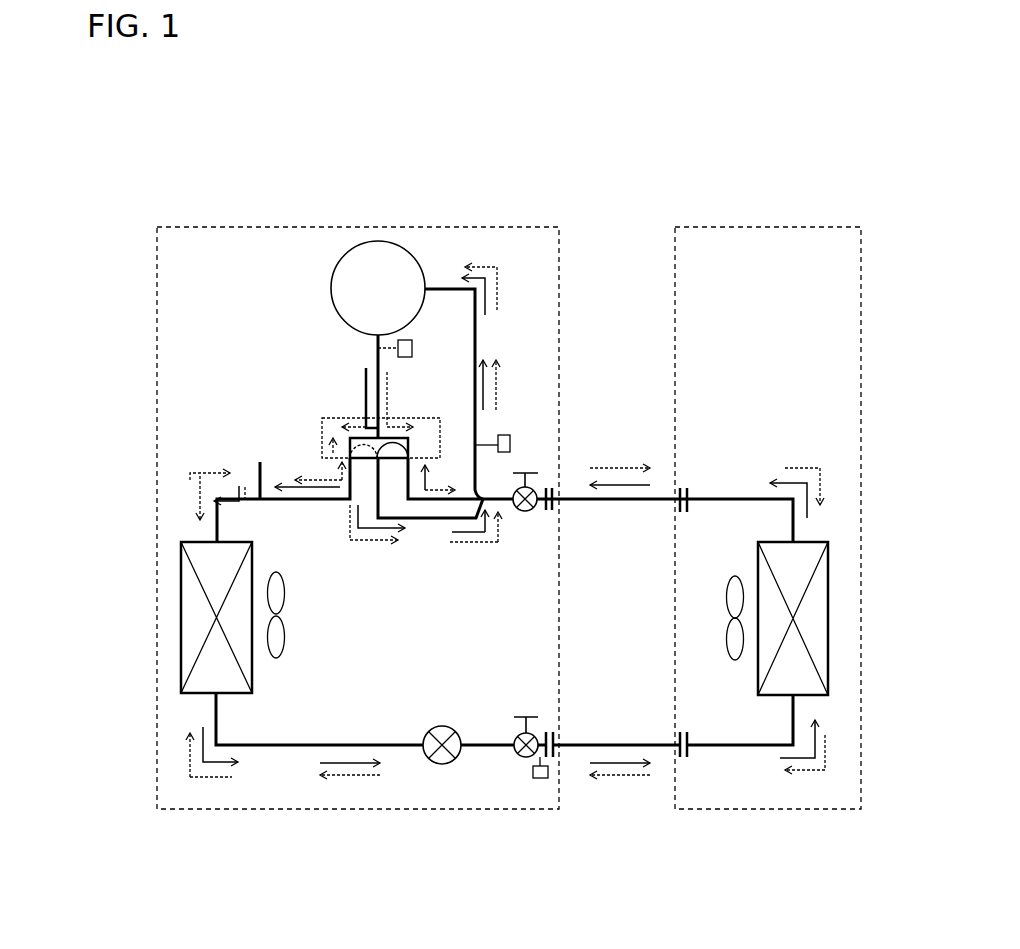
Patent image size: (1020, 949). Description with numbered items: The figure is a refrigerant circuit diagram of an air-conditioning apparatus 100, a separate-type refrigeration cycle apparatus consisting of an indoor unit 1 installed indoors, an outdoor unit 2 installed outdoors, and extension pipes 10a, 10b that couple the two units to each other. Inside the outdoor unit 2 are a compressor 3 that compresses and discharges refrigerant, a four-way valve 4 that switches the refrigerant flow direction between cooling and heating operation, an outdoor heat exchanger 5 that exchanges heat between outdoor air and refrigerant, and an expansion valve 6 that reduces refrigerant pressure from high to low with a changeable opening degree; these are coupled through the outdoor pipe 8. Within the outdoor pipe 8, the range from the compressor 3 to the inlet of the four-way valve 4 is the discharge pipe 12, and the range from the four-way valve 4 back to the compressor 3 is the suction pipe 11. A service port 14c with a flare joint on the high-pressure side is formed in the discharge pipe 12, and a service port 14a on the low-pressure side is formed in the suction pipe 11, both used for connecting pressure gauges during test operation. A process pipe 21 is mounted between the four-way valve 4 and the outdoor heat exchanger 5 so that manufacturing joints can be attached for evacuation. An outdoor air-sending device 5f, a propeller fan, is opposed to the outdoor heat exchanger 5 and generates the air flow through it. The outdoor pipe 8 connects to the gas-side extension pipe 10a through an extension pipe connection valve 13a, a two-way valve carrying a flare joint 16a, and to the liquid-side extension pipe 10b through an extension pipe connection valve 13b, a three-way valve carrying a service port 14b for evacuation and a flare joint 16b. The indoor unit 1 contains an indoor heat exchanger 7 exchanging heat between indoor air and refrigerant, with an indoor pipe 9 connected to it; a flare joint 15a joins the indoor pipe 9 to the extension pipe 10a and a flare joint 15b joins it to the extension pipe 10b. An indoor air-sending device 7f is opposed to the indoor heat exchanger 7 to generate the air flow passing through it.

The air-conditioning apparatus 100 is at (180, 205).
The indoor unit 1 is at (768, 812).
The outdoor unit 2 is at (250, 812).
The compressor 3 is at (331, 280).
The four-way valve 4 is at (322, 437).
The outdoor heat exchanger 5 is at (181, 598).
The outdoor air-sending device 5f is at (285, 637).
The expansion valve 6 is at (450, 727).
The indoor heat exchanger 7 is at (828, 608).
The indoor air-sending device 7f is at (728, 580).
The outdoor pipe 8 is at (295, 746).
The indoor pipe 9 is at (730, 746).
The extension pipe on the gas side 10a is at (577, 499).
The extension pipe on the liquid side 10b is at (618, 745).
The suction pipe 11 is at (445, 288).
The discharge pipe 12 is at (372, 345).
The extension pipe connection valve on the gas side 13a is at (520, 511).
The extension pipe connection valve on the liquid side 13b is at (513, 757).
The service port 14a is at (506, 435).
The service port 14b is at (540, 778).
The service port 14c is at (412, 348).
The flare joint 15a is at (686, 488).
The flare joint 15b is at (680, 760).
The flare joint 16a is at (550, 512).
The flare joint 16b is at (548, 732).
The process pipe 21 is at (258, 473).